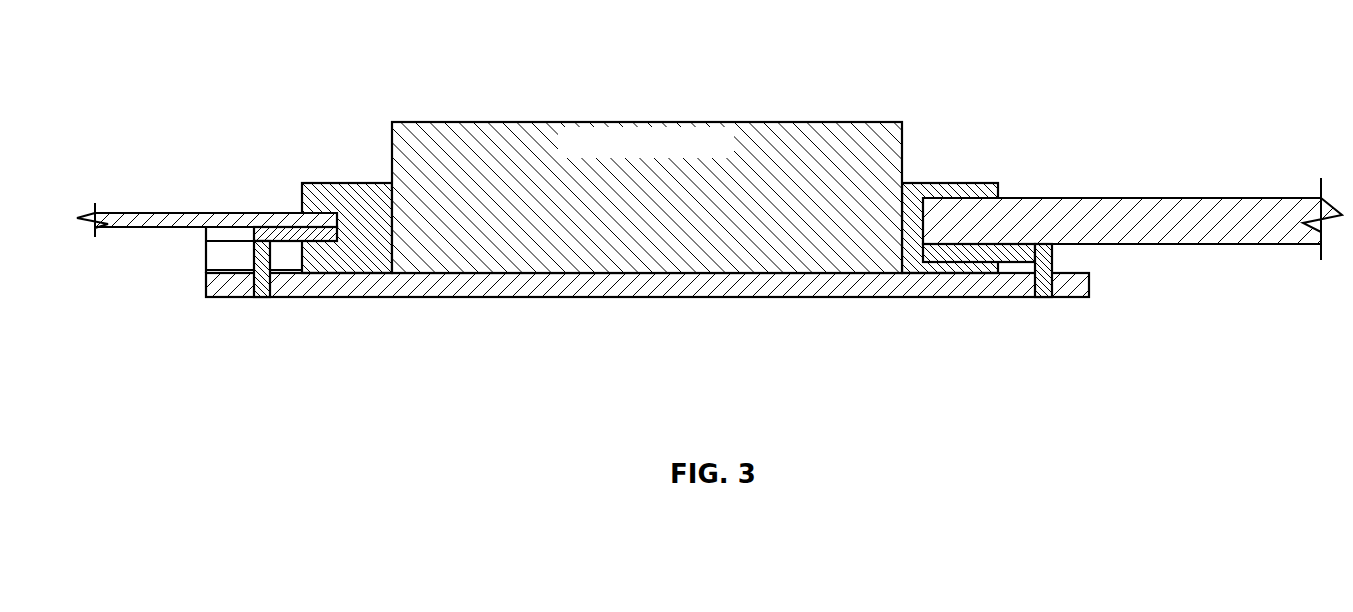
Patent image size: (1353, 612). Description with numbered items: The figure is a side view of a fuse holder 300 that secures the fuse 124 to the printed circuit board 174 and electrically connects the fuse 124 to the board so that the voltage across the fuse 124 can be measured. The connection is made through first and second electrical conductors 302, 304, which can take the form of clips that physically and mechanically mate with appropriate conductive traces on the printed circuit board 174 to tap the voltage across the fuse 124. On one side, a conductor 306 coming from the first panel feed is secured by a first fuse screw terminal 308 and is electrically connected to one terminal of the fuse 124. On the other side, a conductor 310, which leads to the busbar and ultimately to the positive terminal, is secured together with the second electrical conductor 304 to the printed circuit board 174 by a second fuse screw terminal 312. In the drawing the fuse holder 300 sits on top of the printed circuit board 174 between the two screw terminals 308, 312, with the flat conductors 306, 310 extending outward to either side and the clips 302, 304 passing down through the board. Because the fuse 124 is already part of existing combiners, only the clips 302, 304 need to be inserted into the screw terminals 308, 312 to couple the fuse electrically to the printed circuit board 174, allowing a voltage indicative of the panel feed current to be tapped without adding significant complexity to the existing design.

The fuse 124 is at (481, 134).
The printed circuit board 174 is at (525, 293).
The fuse holder 300 is at (772, 122).
The first electrical conductor 302 is at (262, 289).
The second electrical conductor 304 is at (1043, 291).
The conductor 306 is at (172, 217).
The first fuse screw terminal 308 is at (333, 192).
The conductor 310 is at (1030, 207).
The second fuse screw terminal 312 is at (920, 182).